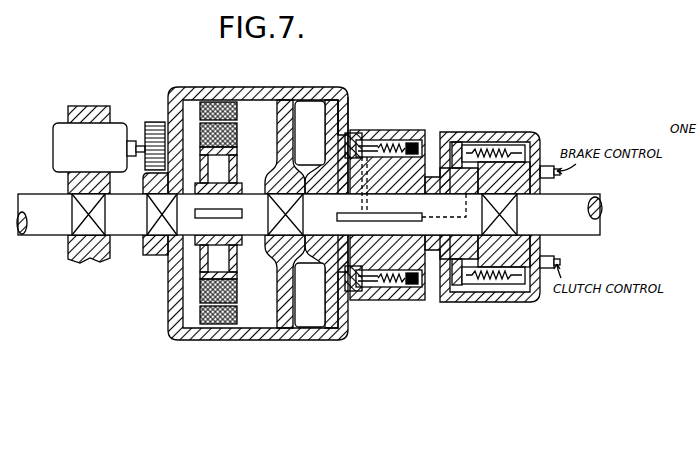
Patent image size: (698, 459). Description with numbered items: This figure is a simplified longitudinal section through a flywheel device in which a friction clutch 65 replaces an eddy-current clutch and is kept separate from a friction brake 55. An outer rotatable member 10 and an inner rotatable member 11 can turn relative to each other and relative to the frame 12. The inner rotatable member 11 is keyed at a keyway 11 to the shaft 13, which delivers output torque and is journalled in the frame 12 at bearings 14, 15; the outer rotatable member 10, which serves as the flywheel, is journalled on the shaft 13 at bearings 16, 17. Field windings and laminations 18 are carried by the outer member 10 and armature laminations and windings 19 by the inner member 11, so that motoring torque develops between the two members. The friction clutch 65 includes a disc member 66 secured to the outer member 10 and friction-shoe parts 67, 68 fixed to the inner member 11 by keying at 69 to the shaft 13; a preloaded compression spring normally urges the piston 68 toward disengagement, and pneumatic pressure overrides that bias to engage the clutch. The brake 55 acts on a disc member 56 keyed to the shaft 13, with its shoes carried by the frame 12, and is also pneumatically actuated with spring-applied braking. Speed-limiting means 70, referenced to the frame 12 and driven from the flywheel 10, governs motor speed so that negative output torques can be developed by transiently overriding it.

The outer rotatable member 10 is at (186, 86).
The inner rotatable member 11 is at (243, 154).
The frame 12 is at (80, 106).
The shaft 13 is at (601, 216).
The bearing 14 is at (80, 240).
The bearing 15 is at (517, 213).
The bearing 16 is at (160, 246).
The bearing 17 is at (283, 238).
The field windings and laminations 18 is at (210, 104).
The armature laminations and windings 19 is at (240, 143).
The friction-brake means 55 is at (474, 124).
The disc member 56 is at (446, 177).
The friction clutch 65 is at (358, 123).
The disc member 66 is at (344, 110).
The friction-shoe part 67 is at (306, 152).
The piston 68 is at (357, 140).
The keying 69 is at (373, 213).
The speed-limiting means 70 is at (54, 140).